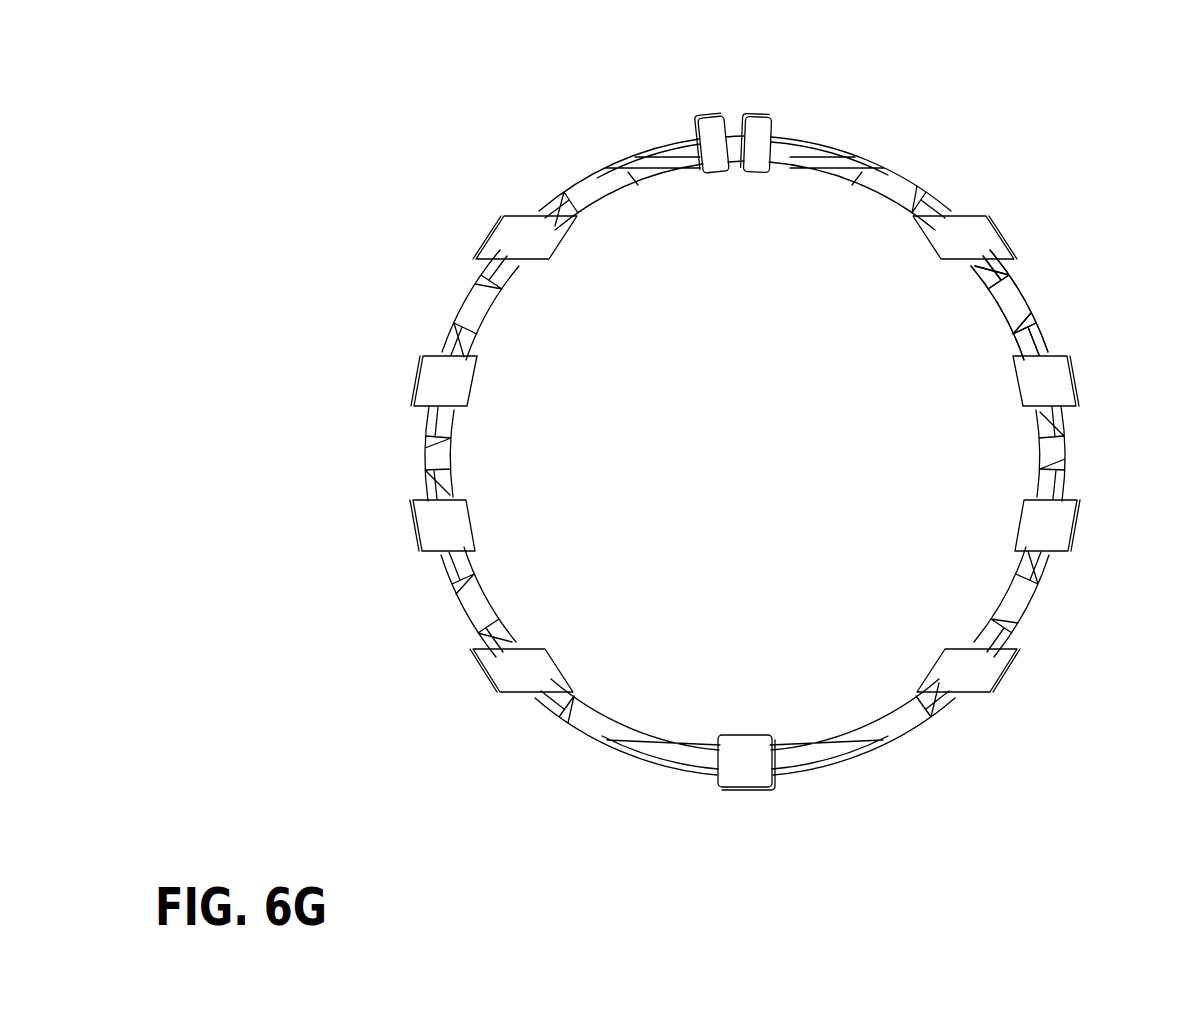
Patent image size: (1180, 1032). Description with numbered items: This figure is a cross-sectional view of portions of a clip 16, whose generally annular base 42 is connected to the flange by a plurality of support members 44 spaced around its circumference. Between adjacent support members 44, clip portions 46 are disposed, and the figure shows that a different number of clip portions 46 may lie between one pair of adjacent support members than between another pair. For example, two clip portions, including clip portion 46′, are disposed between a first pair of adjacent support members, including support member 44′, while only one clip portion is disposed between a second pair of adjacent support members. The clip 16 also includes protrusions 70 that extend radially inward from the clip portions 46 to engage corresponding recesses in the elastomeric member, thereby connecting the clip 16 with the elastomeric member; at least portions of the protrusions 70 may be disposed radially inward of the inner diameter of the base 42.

The clip 16 is at (930, 77).
The base 42 is at (668, 143).
The support member 44 is at (465, 300).
The support member 44′ is at (583, 177).
The clip portion 46 is at (493, 232).
The clip portion 46′ is at (713, 120).
The protrusion 70 is at (1010, 348).